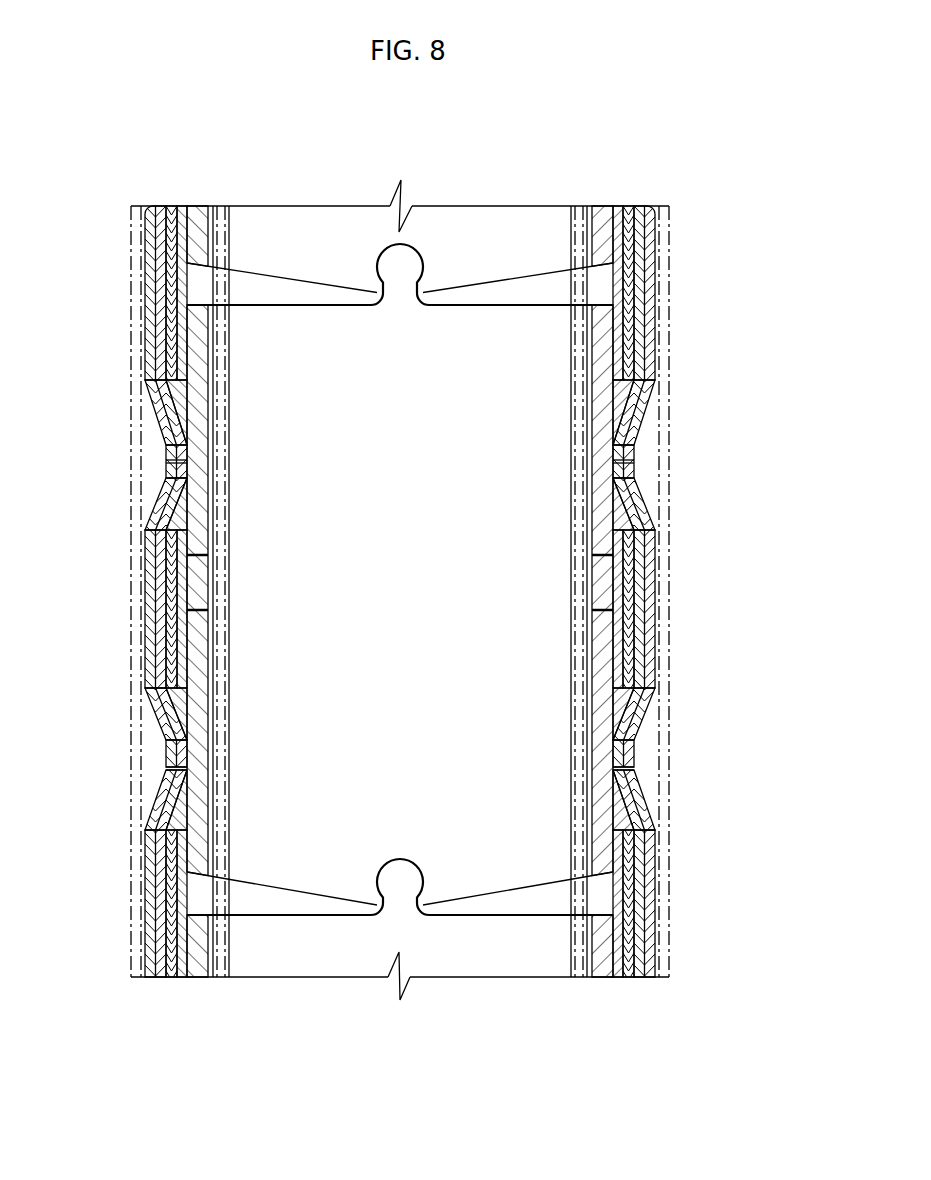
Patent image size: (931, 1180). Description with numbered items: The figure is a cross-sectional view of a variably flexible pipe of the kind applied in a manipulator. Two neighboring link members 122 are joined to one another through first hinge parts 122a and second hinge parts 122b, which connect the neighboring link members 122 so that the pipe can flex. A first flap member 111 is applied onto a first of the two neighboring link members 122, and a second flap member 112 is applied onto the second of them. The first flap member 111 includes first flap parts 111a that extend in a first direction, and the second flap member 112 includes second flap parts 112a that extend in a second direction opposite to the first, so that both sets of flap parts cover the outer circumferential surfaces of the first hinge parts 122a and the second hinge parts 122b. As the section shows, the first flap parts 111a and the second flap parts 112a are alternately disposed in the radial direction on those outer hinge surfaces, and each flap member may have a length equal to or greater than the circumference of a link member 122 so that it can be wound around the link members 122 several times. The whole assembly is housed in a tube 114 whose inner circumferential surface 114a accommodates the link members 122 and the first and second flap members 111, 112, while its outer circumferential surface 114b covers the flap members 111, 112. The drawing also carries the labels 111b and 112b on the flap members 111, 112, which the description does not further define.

The first flap member 111 is at (665, 517).
The first flap part 111a is at (650, 598).
The inner pipe bent portion 111b is at (628, 477).
The second flap member 112 is at (650, 432).
The second flap part 112a is at (638, 640).
The outer pipe bent portion 112b is at (628, 758).
The tube 114 is at (690, 245).
The inner circumferential surface 114a is at (592, 555).
The outer circumferential surface 114b is at (668, 370).
The link member 122 is at (176, 418).
The first hinge part 122a is at (172, 583).
The second hinge part 122b is at (152, 548).